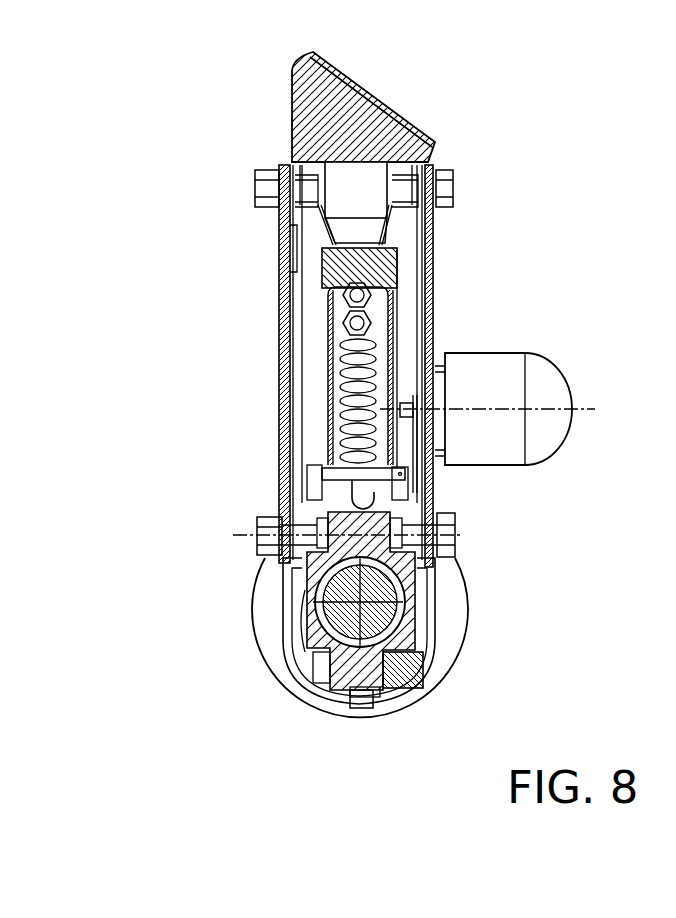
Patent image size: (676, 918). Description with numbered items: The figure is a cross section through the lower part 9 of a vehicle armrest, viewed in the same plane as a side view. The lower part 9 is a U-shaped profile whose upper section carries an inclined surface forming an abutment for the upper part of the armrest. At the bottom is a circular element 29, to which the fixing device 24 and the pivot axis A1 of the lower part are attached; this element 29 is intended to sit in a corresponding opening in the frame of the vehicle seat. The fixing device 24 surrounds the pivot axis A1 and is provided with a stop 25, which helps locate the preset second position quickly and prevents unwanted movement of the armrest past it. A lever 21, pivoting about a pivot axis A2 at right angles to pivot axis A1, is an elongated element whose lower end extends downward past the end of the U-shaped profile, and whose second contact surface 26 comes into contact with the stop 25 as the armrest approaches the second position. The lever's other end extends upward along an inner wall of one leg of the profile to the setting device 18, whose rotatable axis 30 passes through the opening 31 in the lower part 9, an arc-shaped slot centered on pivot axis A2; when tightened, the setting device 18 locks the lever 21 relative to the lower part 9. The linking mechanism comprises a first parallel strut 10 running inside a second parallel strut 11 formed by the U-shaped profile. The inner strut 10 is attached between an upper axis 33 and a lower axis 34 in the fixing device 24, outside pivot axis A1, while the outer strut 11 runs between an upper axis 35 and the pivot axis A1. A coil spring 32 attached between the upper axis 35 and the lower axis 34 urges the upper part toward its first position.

The lower part 9 is at (433, 238).
The first parallel strut 10 is at (328, 268).
The second parallel strut 11 is at (280, 317).
The setting device 18 is at (553, 380).
The lever 21 is at (417, 610).
The fixing device 24 is at (355, 683).
The stop 25 is at (405, 705).
The second contact surface 26 is at (440, 677).
The circular element 29 is at (247, 598).
The axis 30 is at (403, 400).
The opening 31 is at (430, 400).
The coil spring 32 is at (340, 430).
The upper axis 33 is at (423, 178).
The lower axis 34 is at (290, 567).
The upper axis 35 is at (445, 188).
The pivot axis A1 is at (323, 602).
The pivot axis A2 is at (457, 533).